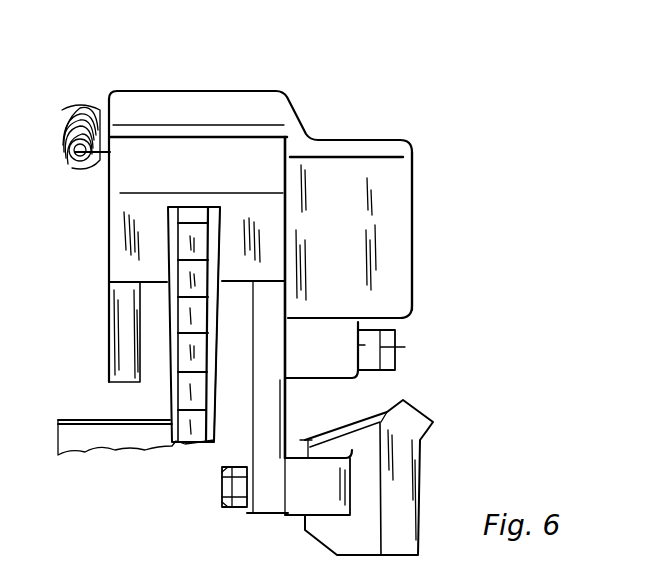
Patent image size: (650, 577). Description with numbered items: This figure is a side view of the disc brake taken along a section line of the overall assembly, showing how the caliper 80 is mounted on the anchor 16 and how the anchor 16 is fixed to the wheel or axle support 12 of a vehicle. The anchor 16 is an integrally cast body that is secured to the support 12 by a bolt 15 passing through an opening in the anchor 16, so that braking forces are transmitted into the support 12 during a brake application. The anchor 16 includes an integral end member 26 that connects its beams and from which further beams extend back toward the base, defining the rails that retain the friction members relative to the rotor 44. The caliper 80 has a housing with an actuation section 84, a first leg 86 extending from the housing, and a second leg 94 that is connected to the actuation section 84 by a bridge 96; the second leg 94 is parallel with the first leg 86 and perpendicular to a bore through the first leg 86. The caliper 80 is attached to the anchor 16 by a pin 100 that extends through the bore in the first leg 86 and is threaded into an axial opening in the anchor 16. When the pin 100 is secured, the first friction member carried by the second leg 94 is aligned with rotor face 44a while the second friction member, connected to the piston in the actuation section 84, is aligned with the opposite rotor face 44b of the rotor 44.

The caliper 80 is at (356, 82).
The bridge 96 is at (197, 89).
The anchor 16 is at (326, 128).
The second leg 94 is at (109, 251).
The end member 26 is at (109, 343).
The rotor face 44a is at (170, 400).
The rotor face 44b is at (216, 426).
The rotor 44 is at (96, 440).
The bolt 15 is at (222, 487).
The actuation section 84 is at (413, 201).
The first leg 86 is at (325, 380).
The pin 100 is at (400, 378).
The wheel or axle support 12 is at (408, 475).